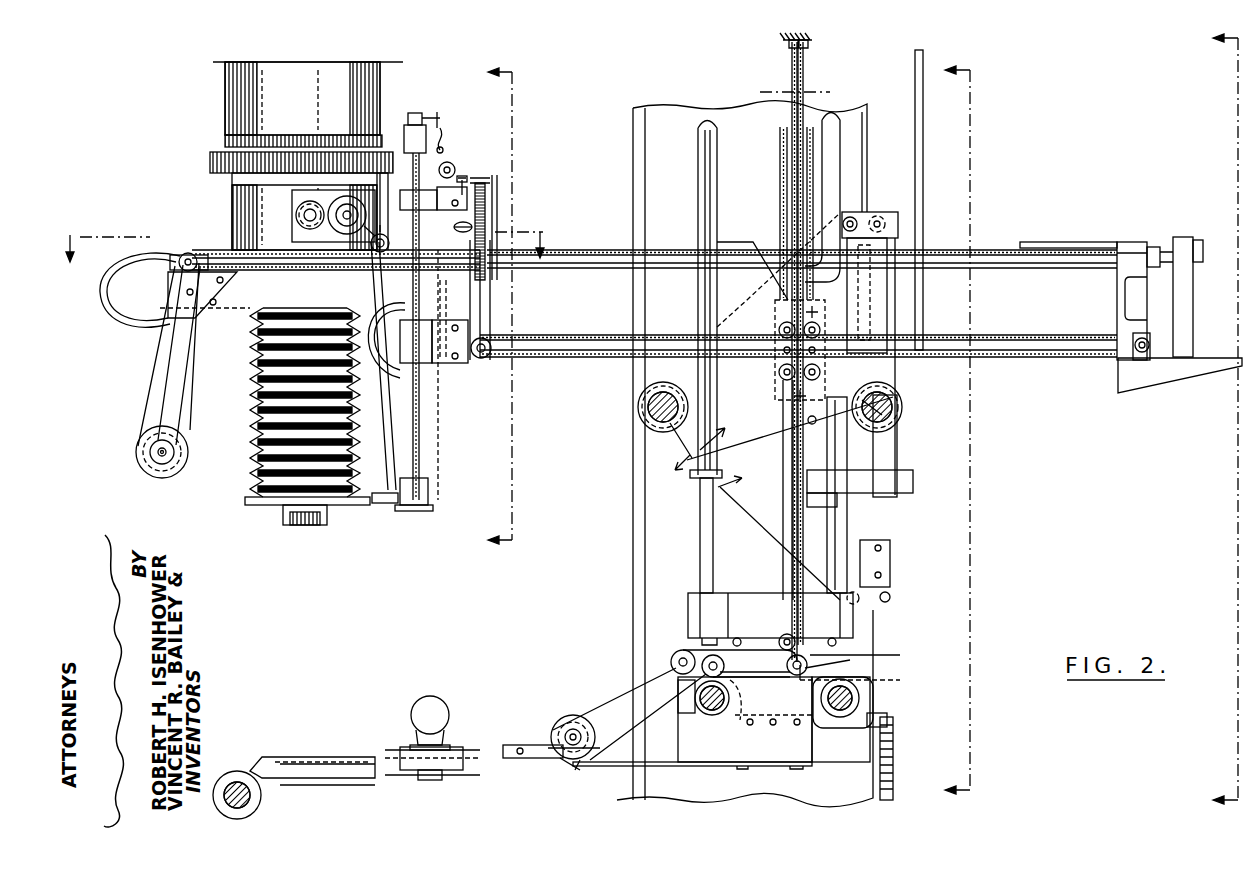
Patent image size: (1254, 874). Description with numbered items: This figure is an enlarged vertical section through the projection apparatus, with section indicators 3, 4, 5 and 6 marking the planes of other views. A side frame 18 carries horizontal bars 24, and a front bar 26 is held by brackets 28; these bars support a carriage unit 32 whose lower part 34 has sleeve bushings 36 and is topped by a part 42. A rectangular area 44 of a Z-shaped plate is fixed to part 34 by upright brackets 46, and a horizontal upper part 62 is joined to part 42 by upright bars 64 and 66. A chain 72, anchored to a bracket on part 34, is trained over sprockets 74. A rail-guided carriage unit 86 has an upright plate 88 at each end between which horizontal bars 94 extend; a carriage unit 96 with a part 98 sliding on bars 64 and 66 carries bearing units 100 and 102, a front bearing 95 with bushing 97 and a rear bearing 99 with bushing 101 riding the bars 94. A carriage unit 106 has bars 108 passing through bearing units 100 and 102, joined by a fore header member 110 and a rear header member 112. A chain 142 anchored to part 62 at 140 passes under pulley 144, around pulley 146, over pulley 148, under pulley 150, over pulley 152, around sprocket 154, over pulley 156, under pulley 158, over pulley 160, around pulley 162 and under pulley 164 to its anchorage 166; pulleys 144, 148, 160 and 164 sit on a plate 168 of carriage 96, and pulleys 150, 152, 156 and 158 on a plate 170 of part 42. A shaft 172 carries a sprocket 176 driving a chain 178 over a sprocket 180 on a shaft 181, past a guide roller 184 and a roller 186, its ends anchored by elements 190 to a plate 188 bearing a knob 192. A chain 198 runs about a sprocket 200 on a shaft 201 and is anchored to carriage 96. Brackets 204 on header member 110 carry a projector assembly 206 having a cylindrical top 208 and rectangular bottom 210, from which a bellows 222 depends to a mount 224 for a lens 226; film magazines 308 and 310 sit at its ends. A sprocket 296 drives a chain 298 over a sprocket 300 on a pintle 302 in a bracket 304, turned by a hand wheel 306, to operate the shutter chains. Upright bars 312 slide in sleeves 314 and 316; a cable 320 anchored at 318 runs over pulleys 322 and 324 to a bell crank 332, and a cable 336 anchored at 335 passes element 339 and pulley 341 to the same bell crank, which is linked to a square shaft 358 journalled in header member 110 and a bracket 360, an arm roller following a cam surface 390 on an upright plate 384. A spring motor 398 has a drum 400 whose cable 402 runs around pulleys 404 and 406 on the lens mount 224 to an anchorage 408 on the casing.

The section line 3- 3 is at (971, 429).
The section line 4- 4 is at (1210, 418).
The section line 5- 5 is at (513, 306).
The section line 6- 6 is at (311, 237).
The side frame 18 is at (645, 551).
The bars 24 is at (712, 710).
The bar 26 is at (255, 793).
The brackets 28 is at (214, 792).
The carriage unit 32 is at (670, 615).
The part 34 is at (836, 720).
The sleeve bushings 36 is at (698, 710).
The part 42 is at (746, 600).
The rectangular area 44 is at (640, 768).
The upright brackets 46 is at (735, 760).
The part 62 is at (812, 38).
The bars 64 is at (698, 145).
The bars 66 is at (842, 118).
The chain 72 is at (893, 768).
The sprockets 74 is at (890, 718).
The carriage unit 86 is at (698, 482).
The upright plate 88 is at (732, 500).
The bars 94 is at (668, 430).
The bearing 95 is at (648, 415).
The carriage unit 96 is at (672, 472).
The sleeve bushing 97 is at (640, 402).
The part 98 is at (745, 442).
The bearing 99 is at (895, 405).
The bearing unit 100 is at (742, 245).
The sleeve bushing 101 is at (900, 395).
The bearing unit 102 is at (885, 300).
The carriage unit 106 is at (588, 233).
The bars 108 is at (595, 270).
The header member 110 is at (485, 305).
The header member 112 is at (1123, 300).
The anchorage 140 is at (788, 45).
The chain 142 is at (791, 66).
The pulley 144 is at (780, 326).
The pulley 146 is at (490, 340).
The pulley 148 is at (800, 378).
The pulley 150 is at (785, 636).
The pulley 152 is at (675, 655).
The sprocket 154 is at (630, 689).
The pulley 156 is at (740, 686).
The pulley 158 is at (798, 682).
The pulley 160 is at (795, 400).
The pulley 162 is at (1128, 360).
The pulley 164 is at (822, 322).
The anchorage 166 is at (804, 50).
The plate 168 is at (780, 371).
The plate 170 is at (859, 657).
The shaft 172 is at (586, 766).
The sprocket 176 is at (568, 714).
The chain 178 is at (562, 735).
The sprocket 180 is at (550, 745).
The shaft 181 is at (560, 762).
The guide roller 184 is at (506, 746).
The roller 186 is at (300, 760).
The plate 188 is at (405, 750).
The elements 190 is at (428, 781).
The knob 192 is at (430, 696).
The chain 198 is at (808, 480).
The sprocket 200 is at (859, 670).
The shaft 201 is at (870, 635).
The brackets 204 is at (390, 190).
The projector assembly 206 is at (271, 142).
The cylindrical top 208 is at (316, 72).
The rectangular bottom 210 is at (230, 312).
The bellows 222 is at (250, 418).
The lens mount 224 is at (262, 505).
The lens 226 is at (303, 526).
The sprocket 296 is at (188, 253).
The chain 298 is at (150, 405).
The sprocket 300 is at (145, 436).
The pintle 302 is at (165, 462).
The bracket 304 is at (170, 357).
The hand wheel 306 is at (138, 460).
The film magazine 308 is at (106, 300).
The film magazine 310 is at (392, 372).
The upright bars 312 is at (420, 428).
The sleeve 314 is at (430, 360).
The sleeve 316 is at (456, 168).
The anchorage 318 is at (445, 125).
The cable 320 is at (446, 130).
The pulley 322 is at (468, 176).
The pulley 324 is at (470, 180).
The bell crank 332 is at (500, 230).
The anchorage 335 is at (385, 503).
The cable 336 is at (392, 451).
The rack 339 is at (488, 210).
The pulley 341 is at (490, 183).
The shaft 358 is at (1080, 242).
The bracket 360 is at (1190, 300).
The upright plate 384 is at (923, 198).
The cam surface 390 is at (915, 330).
The spring motor 398 is at (308, 195).
The drum 400 is at (312, 219).
The cable 402 is at (448, 160).
The pulley 404 is at (470, 190).
The pulley 406 is at (428, 471).
The anchorage 408 is at (372, 256).